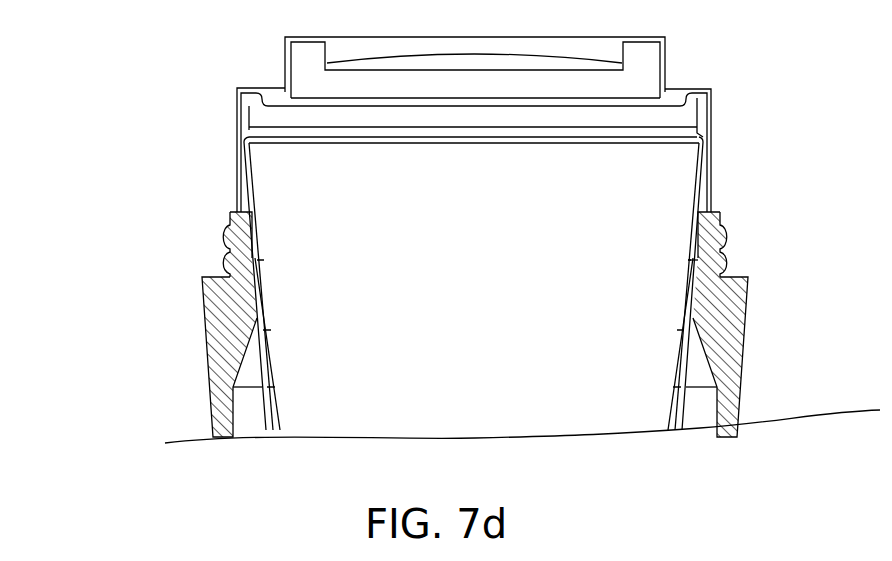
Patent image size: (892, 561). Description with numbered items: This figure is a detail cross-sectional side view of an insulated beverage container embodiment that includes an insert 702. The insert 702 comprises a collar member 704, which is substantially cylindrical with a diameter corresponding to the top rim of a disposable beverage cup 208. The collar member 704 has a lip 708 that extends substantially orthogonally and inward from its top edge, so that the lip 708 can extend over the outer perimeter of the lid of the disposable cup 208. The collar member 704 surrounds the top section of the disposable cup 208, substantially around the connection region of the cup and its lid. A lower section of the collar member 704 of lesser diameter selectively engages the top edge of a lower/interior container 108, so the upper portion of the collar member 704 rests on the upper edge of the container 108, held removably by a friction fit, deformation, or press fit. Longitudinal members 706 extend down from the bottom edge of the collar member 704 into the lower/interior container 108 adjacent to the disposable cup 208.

The lip 708 is at (256, 84).
The insert 702 is at (200, 117).
The collar member 704 is at (227, 152).
The disposable beverage cup 208 is at (330, 180).
The lower/interior container 108 is at (192, 332).
The longitudinal members 706 is at (248, 397).